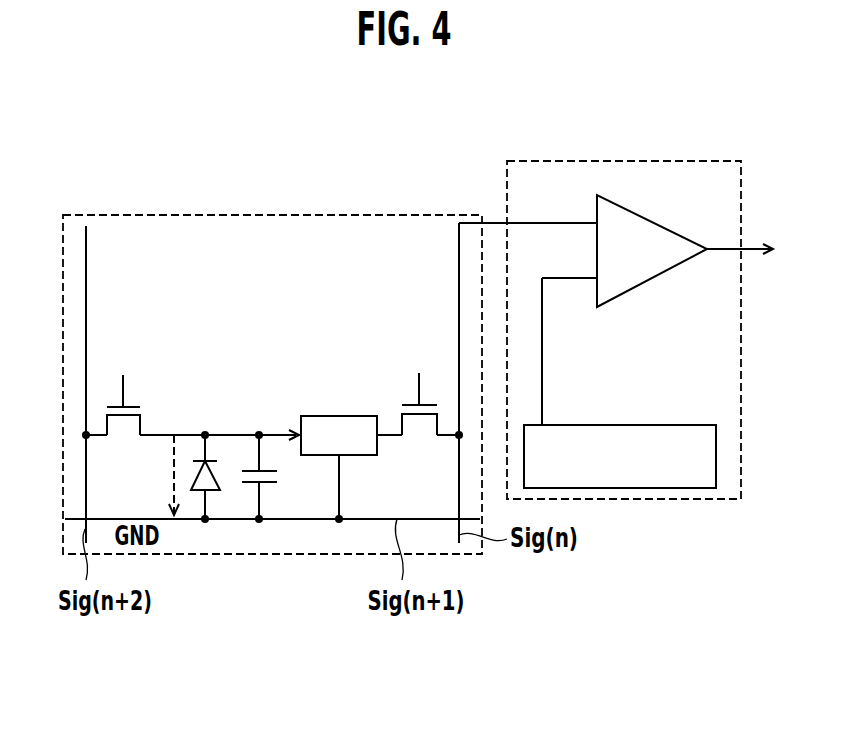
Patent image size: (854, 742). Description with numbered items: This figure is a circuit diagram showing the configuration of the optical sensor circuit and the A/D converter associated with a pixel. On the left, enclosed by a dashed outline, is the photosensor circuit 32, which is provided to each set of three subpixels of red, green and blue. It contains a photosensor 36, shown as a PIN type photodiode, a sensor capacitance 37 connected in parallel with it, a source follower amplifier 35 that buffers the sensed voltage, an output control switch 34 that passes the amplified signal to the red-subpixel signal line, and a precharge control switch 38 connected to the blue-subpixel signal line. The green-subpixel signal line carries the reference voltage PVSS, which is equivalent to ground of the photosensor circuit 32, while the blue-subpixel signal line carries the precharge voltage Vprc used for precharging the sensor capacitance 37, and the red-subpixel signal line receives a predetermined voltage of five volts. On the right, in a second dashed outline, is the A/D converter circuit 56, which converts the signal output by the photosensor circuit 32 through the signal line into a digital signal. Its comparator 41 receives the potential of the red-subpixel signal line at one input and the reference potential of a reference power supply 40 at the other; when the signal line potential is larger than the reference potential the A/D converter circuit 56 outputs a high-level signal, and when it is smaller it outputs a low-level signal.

The photosensor circuit 32 is at (261, 214).
The output control switch 34 is at (425, 430).
The source follower amplifier 35 is at (341, 416).
The photosensor 36 is at (207, 458).
The sensor capacitance 37 is at (277, 485).
The precharge control switch 38 is at (122, 438).
The reference power supply 40 is at (598, 424).
The comparator 41 is at (676, 229).
The A/D converter circuit 56 is at (617, 160).